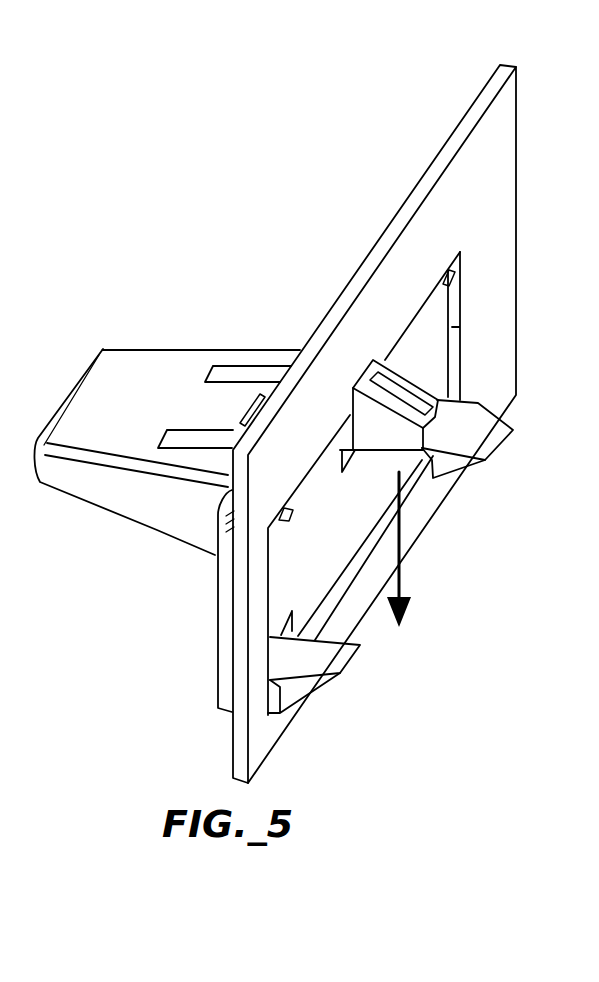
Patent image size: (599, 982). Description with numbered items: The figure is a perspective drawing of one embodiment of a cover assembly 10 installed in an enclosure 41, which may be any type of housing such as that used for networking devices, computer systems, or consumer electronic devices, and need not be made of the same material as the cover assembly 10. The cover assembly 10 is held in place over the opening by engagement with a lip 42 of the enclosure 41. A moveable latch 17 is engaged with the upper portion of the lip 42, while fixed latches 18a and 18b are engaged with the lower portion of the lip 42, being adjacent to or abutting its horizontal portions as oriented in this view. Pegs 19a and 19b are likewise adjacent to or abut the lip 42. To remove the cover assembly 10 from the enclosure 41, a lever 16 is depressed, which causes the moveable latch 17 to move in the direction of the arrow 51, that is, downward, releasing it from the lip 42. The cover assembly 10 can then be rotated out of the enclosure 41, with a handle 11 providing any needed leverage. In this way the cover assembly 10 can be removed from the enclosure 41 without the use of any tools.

The cover assembly 10 is at (172, 256).
The handle 11 is at (117, 373).
The lever 16 is at (260, 393).
The moveable latch 17 is at (372, 359).
The fixed latch 18a is at (307, 690).
The fixed latch 18b is at (493, 448).
The peg 19a is at (293, 518).
The peg 19b is at (458, 280).
The enclosure 41 is at (495, 167).
The lip 42 is at (460, 327).
The arrow 51 is at (400, 577).